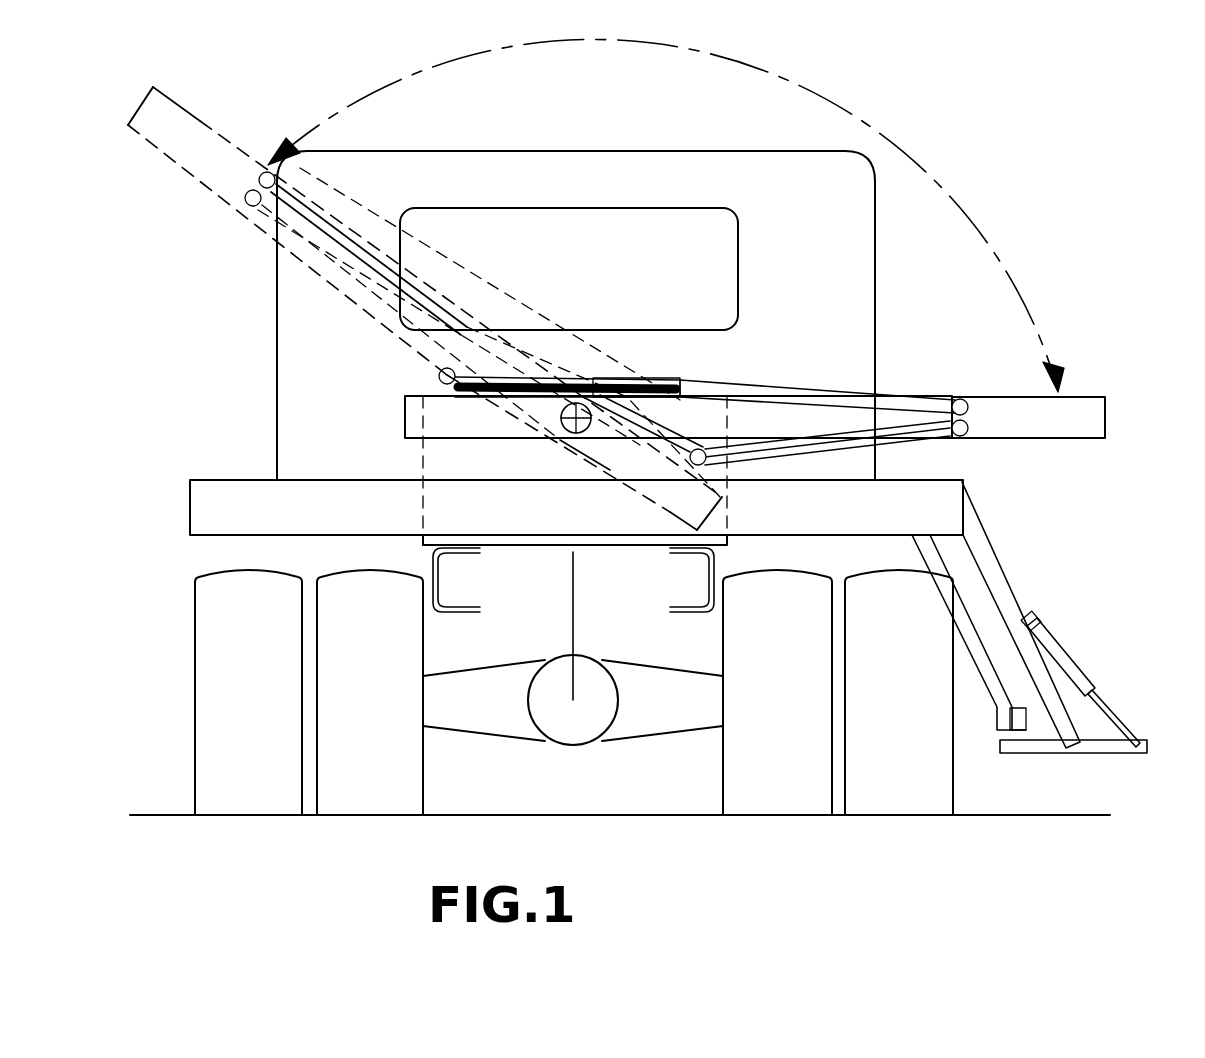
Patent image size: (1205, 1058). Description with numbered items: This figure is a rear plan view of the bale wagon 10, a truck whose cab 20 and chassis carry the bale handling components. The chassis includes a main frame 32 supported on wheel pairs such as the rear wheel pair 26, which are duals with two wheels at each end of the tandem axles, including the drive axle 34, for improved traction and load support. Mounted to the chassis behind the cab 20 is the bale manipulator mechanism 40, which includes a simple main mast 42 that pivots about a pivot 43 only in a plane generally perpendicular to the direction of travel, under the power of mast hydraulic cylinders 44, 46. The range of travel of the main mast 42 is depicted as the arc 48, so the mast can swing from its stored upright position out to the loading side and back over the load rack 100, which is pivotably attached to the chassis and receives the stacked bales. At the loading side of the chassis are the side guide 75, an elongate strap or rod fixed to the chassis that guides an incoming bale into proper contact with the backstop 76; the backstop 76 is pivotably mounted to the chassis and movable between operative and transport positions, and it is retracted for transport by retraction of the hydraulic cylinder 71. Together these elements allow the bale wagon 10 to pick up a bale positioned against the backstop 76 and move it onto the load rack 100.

The bale wagon 10 is at (1180, 88).
The truck cab 20 is at (856, 266).
The wheel pair 26 is at (360, 797).
The main frame 32 is at (720, 562).
The drive axle 34 is at (567, 727).
The bale manipulator mechanism 40 is at (897, 369).
The main mast 42 is at (1088, 421).
The pivot 43 is at (563, 425).
The mast hydraulic cylinder 44 is at (646, 378).
The mast hydraulic cylinder 46 is at (900, 452).
The arc 48 is at (814, 88).
The hydraulic cylinder 71 is at (1063, 648).
The side guide 75 is at (1017, 717).
The backstop 76 is at (1117, 748).
The load rack 100 is at (943, 507).